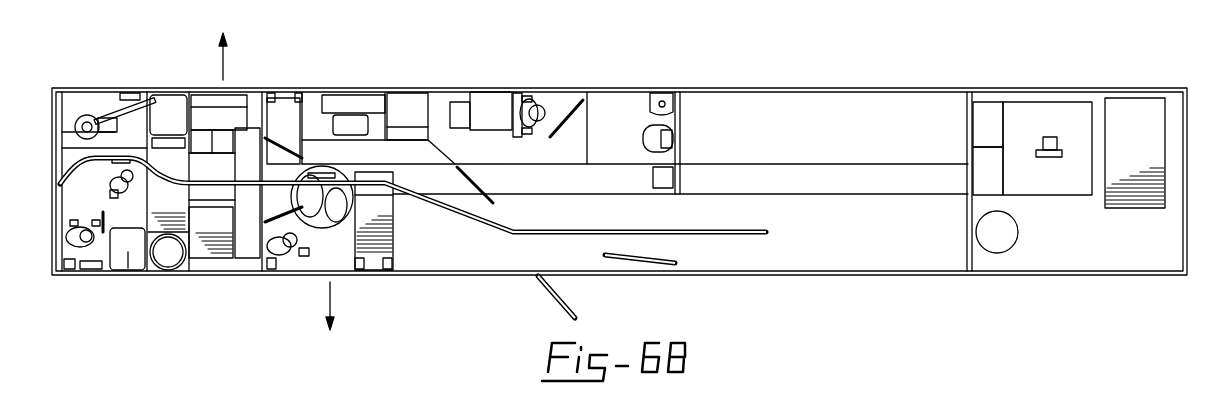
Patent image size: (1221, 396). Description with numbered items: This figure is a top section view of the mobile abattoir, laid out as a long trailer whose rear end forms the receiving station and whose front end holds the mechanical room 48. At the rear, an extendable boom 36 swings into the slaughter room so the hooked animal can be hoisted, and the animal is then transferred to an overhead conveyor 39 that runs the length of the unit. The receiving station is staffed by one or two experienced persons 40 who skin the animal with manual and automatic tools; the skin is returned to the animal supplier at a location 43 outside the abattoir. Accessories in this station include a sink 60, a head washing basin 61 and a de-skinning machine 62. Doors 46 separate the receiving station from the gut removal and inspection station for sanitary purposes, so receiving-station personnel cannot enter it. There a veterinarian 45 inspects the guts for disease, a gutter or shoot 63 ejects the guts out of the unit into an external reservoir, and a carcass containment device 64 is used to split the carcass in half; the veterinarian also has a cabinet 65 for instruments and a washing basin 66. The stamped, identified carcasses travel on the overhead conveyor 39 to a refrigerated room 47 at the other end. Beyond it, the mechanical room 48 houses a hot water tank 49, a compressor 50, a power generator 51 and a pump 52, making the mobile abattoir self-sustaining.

The extendable boom 36 is at (120, 98).
The overhead conveyor 39 is at (492, 235).
The persons 40 is at (87, 237).
The location 43 is at (227, 66).
The veterinarian 45 is at (538, 106).
The doors 46 is at (280, 148).
The refrigerated room 47 is at (847, 133).
The mechanical room 48 is at (1120, 250).
The hot water tank 49 is at (995, 242).
The compressor 50 is at (992, 165).
The power generator 51 is at (1137, 130).
The pump 52 is at (1068, 183).
The sink 60 is at (135, 247).
The head washing basin 61 is at (177, 105).
The de-skinning machine 62 is at (203, 97).
The gutter or shoot 63 is at (347, 258).
The carcass containment device 64 is at (325, 173).
The cabinet 65 is at (335, 97).
The washing basin 66 is at (375, 128).